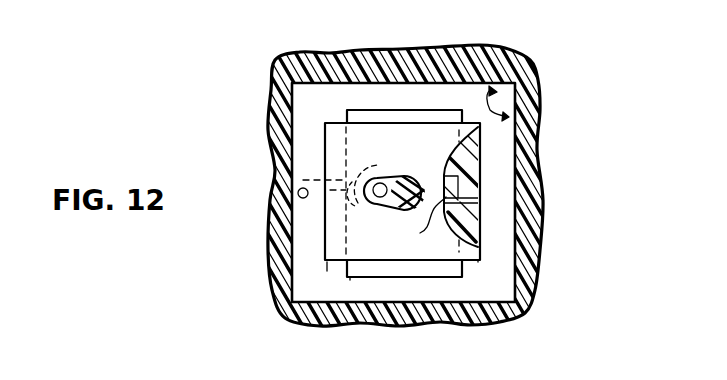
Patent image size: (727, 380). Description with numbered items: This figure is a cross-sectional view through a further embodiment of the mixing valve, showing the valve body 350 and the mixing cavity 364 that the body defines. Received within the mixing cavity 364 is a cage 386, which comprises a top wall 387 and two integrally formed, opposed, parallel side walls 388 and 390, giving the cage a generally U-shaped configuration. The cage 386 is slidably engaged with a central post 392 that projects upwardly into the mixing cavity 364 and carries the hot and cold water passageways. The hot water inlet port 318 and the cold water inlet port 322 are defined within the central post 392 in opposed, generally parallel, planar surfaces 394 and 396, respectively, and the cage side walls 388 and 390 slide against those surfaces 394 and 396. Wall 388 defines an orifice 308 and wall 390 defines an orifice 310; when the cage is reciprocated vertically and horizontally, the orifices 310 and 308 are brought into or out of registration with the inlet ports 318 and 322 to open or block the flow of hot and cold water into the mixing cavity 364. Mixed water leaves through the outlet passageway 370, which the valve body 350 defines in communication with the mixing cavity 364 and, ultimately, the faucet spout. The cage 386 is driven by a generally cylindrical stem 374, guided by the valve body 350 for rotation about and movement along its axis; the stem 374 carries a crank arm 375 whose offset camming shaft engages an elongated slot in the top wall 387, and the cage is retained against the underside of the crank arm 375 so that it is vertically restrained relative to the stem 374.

The valve body 350 is at (497, 70).
The mixing cavity 364 is at (500, 106).
The cage 386 is at (486, 132).
The side wall 388 is at (470, 170).
The top wall 387 is at (370, 140).
The crank arm 375 is at (388, 176).
The stem 374 is at (404, 172).
The side wall 390 is at (334, 148).
The orifice 310 is at (274, 174).
The outlet passageway 370 is at (297, 206).
The hot water inlet port 318 is at (349, 222).
The cold water inlet port 322 is at (413, 225).
The planar surface 394 is at (342, 274).
The central post 392 is at (354, 282).
The planar surface 396 is at (472, 276).
The orifice 308 is at (460, 264).